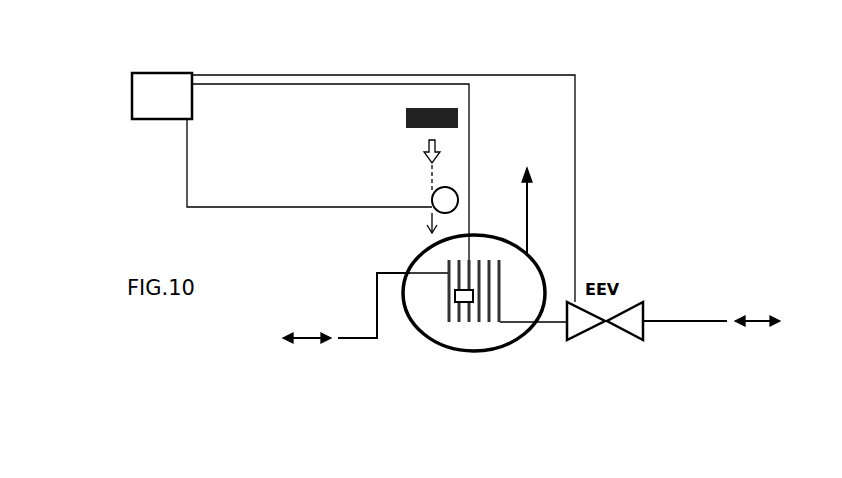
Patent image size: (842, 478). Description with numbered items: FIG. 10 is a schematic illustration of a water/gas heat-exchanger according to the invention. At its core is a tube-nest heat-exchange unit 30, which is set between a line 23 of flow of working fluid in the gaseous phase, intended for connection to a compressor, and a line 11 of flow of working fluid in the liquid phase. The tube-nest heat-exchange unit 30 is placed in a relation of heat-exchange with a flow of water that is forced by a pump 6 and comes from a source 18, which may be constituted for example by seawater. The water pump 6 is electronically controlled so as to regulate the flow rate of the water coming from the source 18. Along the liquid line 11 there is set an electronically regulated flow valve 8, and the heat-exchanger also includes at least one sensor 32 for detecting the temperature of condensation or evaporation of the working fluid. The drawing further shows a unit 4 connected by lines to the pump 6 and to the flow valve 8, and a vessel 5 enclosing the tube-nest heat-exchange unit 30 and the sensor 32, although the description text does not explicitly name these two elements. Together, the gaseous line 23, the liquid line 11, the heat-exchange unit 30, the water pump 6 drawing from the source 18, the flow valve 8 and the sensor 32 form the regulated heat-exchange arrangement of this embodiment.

The controller 4 is at (173, 87).
The source 18 is at (406, 120).
The water pump 6 is at (432, 196).
The line of flow of working fluid in the gaseous phase 23 is at (368, 340).
The heat exchanger vessel 5 is at (480, 328).
The tube-nest heat-exchange unit 30 is at (483, 305).
The sensor 32 is at (455, 300).
The electronically regulated flow valve 8 is at (620, 333).
The line of flow of working fluid in the liquid phase 11 is at (655, 318).